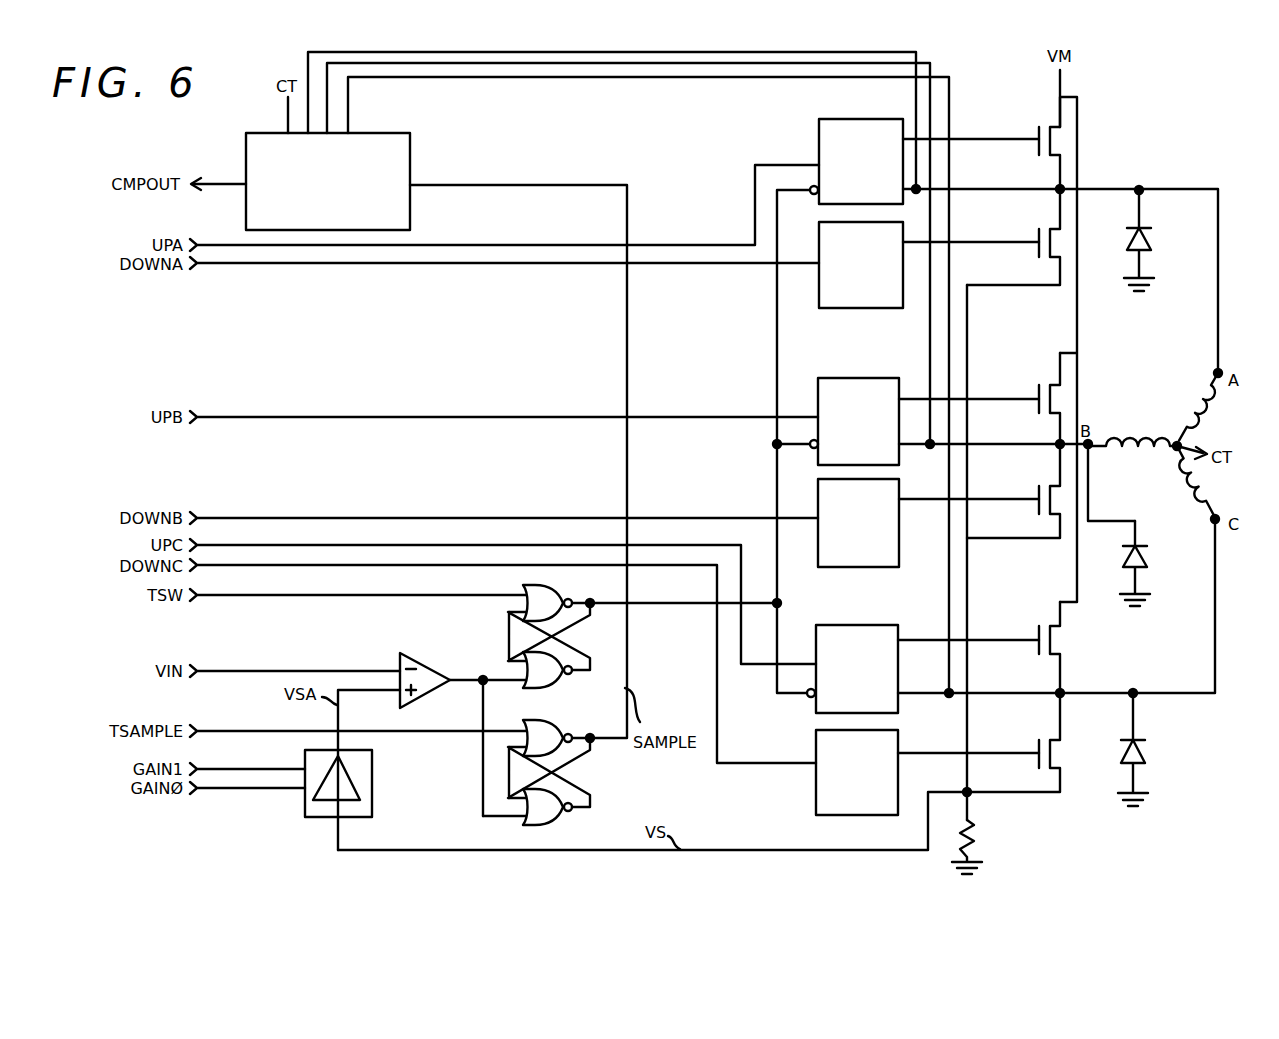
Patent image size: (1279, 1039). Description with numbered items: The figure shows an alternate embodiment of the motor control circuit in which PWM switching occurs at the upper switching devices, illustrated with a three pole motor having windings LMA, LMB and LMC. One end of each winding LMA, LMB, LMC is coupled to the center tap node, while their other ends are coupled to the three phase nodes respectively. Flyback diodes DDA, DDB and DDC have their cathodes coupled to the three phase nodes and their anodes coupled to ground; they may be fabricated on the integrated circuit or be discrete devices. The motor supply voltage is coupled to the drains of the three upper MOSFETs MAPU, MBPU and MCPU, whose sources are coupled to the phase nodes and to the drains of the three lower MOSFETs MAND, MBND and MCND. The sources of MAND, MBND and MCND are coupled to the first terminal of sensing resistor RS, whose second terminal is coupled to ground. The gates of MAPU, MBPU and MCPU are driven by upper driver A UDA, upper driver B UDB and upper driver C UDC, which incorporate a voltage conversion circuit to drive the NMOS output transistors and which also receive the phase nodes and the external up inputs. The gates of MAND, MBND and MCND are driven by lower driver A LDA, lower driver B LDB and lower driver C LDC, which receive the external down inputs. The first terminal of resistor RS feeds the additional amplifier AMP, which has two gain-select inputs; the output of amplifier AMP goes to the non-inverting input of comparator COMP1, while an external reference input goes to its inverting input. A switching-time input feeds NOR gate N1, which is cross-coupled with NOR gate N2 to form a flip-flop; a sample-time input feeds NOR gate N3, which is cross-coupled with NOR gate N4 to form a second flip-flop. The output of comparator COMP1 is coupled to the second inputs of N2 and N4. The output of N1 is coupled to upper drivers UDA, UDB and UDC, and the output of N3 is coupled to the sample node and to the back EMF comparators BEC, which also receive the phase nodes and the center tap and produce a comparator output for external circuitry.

The back EMF comparators BEC is at (392, 131).
The upper driver A UDA is at (819, 124).
The lower driver A LDA is at (840, 308).
The upper driver B UDB is at (845, 378).
The lower driver B LDB is at (840, 567).
The upper driver C UDC is at (848, 625).
The lower driver C LDC is at (835, 815).
The upper MOSFET MAPU is at (1022, 143).
The lower MOSFET MAND is at (1013, 237).
The upper MOSFET MBPU is at (1022, 398).
The lower MOSFET MBND is at (1013, 491).
The upper MOSFET MCPU is at (1022, 647).
The lower MOSFET MCND is at (1013, 742).
The flyback diode DDA is at (1159, 240).
The flyback diode DDB is at (1155, 563).
The flyback diode DDC is at (1154, 749).
The motor winding LMA is at (1212, 409).
The motor winding LMB is at (1132, 457).
The motor winding LMC is at (1205, 483).
The sensing resistor RS is at (977, 847).
The NOR gate N1 is at (540, 594).
The NOR gate N2 is at (511, 680).
The NOR gate N3 is at (543, 730).
The NOR gate N4 is at (528, 817).
The comparator COMP1 is at (440, 641).
The additional amplifier AMP is at (358, 783).